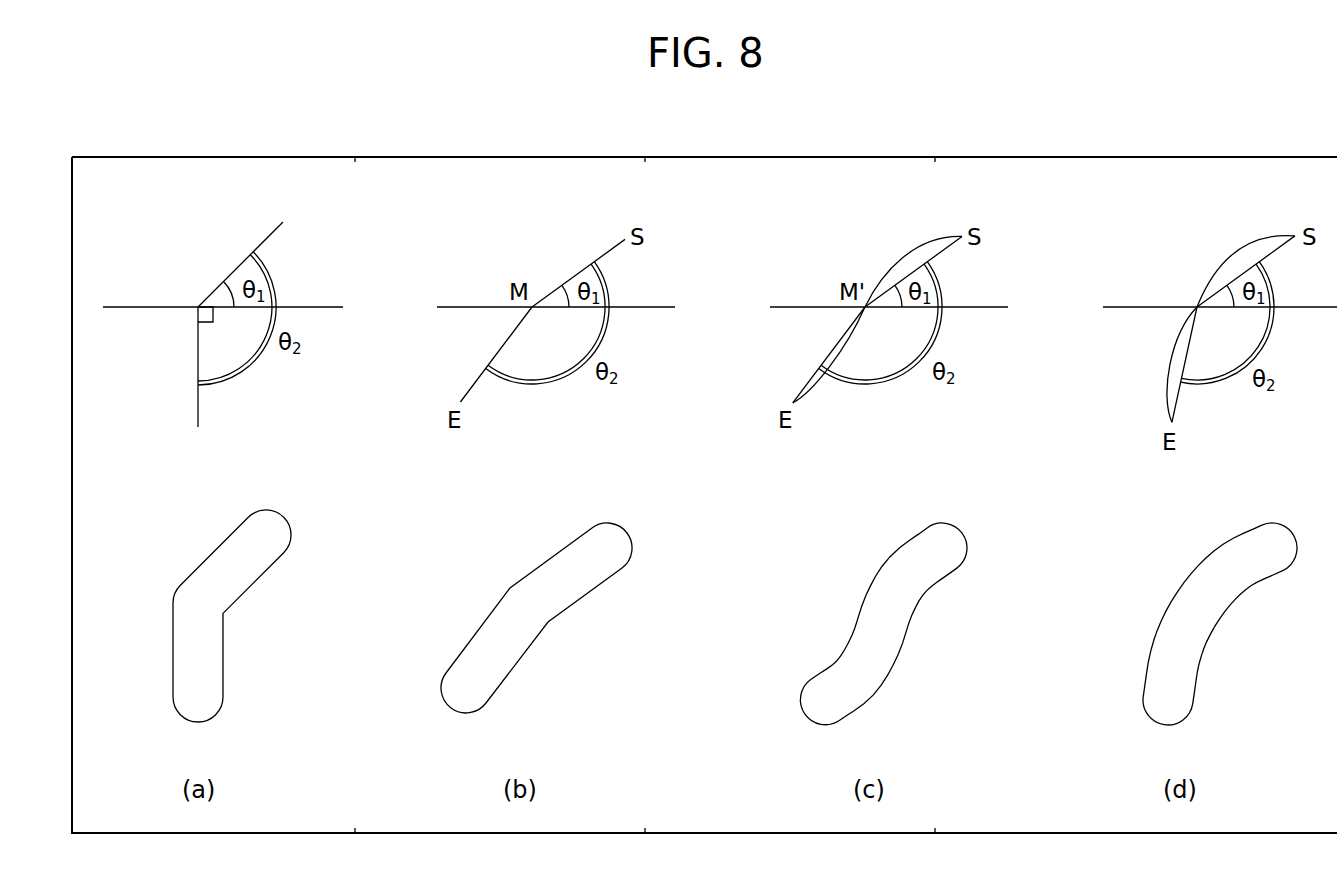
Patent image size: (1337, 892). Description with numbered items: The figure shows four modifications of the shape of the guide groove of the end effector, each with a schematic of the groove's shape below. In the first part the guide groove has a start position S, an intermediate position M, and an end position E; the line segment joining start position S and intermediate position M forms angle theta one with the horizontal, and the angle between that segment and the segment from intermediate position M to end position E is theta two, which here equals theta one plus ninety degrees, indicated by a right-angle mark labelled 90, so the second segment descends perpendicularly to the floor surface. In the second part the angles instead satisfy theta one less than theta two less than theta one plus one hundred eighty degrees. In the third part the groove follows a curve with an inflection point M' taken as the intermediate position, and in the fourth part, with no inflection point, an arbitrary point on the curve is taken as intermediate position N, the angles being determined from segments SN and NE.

The intermediate position M is at (223, 293).
The start position S is at (250, 259).
The end position E is at (197, 383).
The intermediate position N is at (1220, 293).
The right angle (90 degrees) marker 90 is at (225, 331).